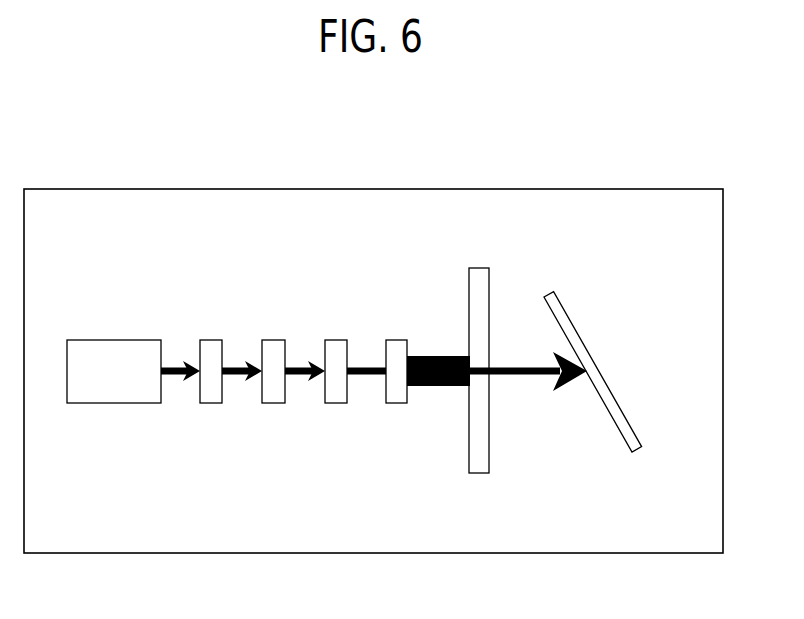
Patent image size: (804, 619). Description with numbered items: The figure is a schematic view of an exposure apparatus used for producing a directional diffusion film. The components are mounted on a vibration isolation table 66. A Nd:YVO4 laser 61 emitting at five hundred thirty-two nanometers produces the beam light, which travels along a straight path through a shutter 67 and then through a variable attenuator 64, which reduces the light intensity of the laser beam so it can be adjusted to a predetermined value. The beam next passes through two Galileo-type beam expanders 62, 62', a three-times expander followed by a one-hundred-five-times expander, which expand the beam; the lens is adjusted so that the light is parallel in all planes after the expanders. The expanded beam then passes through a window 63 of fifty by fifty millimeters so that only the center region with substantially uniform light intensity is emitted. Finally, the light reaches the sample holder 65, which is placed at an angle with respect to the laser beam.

The Nd:YVO4 laser 61 is at (110, 353).
The shutter 67 is at (208, 353).
The variable attenuator 64 is at (272, 353).
The Galileo-type beam expander 62 is at (337, 340).
The Galileo-type beam expander 62' is at (401, 340).
The window 63 is at (478, 283).
The sample holder 65 is at (636, 454).
The vibration isolation table 66 is at (692, 205).